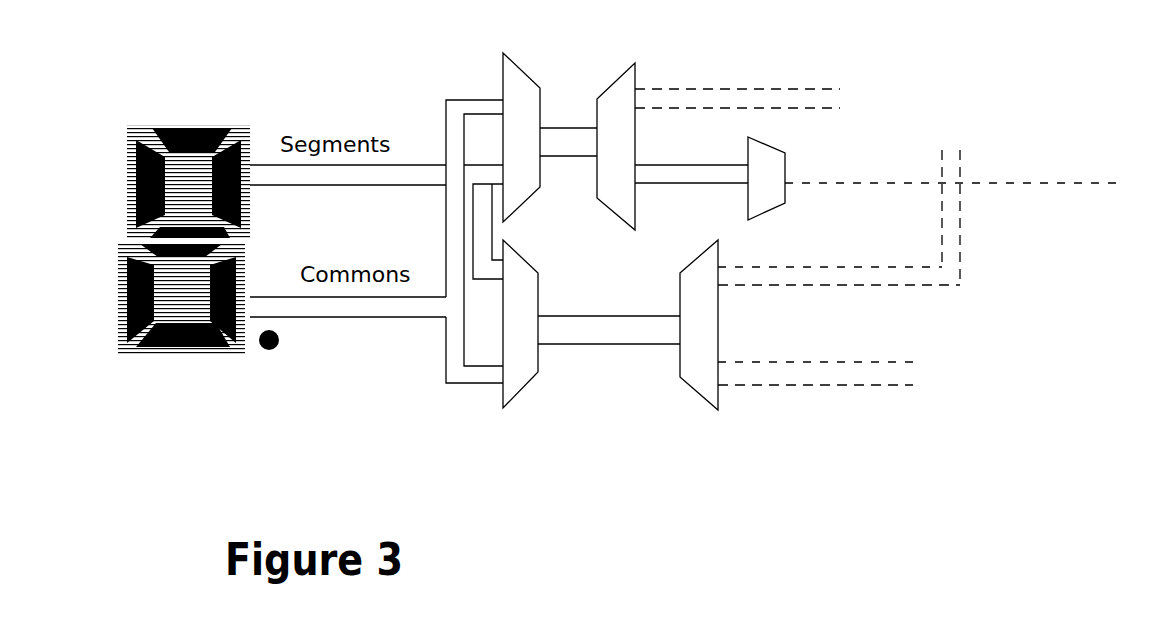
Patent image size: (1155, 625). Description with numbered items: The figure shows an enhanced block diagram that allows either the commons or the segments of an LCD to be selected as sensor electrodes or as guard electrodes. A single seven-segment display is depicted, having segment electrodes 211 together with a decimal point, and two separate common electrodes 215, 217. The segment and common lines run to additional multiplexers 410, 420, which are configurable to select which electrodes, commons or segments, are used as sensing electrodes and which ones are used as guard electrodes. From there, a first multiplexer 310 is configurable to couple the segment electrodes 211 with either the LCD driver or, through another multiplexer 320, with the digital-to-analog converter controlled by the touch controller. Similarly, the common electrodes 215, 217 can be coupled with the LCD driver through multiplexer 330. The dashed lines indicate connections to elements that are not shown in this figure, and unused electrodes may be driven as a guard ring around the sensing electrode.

The segment electrodes 211 is at (163, 213).
The common electrode 215 is at (117, 252).
The common electrode 217 is at (263, 78).
The first multiplexer 310 is at (633, 65).
The multiplexer 320 is at (757, 185).
The multiplexer 330 is at (690, 312).
The multiplexer 410 is at (523, 92).
The multiplexer 420 is at (517, 278).